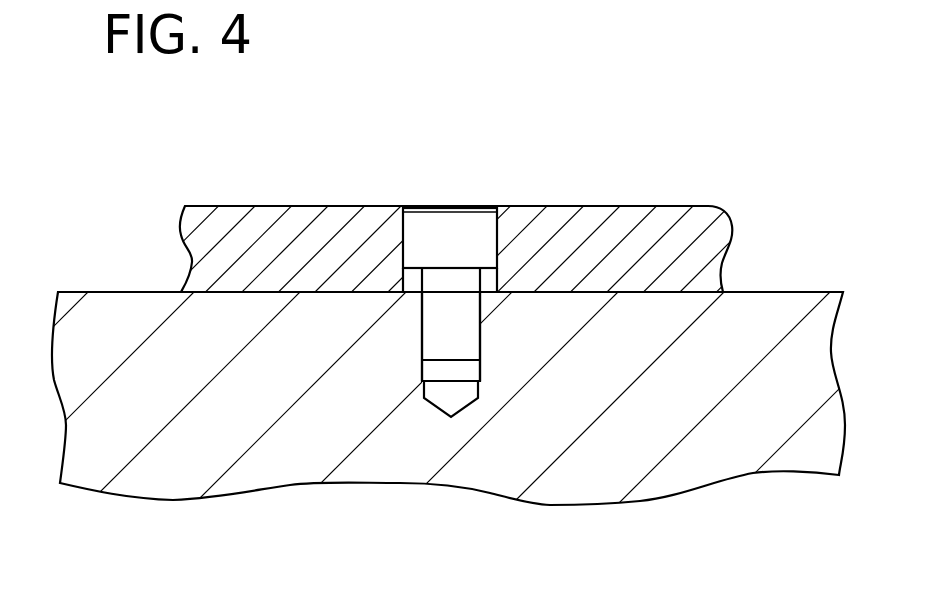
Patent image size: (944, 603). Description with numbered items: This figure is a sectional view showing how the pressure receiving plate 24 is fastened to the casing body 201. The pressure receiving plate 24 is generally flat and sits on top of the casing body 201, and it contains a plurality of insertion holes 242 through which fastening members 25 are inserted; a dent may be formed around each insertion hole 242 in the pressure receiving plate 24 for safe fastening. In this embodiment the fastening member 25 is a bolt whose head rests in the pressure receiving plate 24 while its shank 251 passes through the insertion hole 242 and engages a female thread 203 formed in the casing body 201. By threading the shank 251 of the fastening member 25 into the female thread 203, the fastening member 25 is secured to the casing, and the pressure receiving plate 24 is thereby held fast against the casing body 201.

The casing body 201 is at (761, 292).
The female thread 203 is at (422, 352).
The pressure receiving plate 24 is at (668, 205).
The fastening member 25 is at (472, 344).
The insertion hole 242 is at (422, 284).
The shank 251 is at (480, 354).